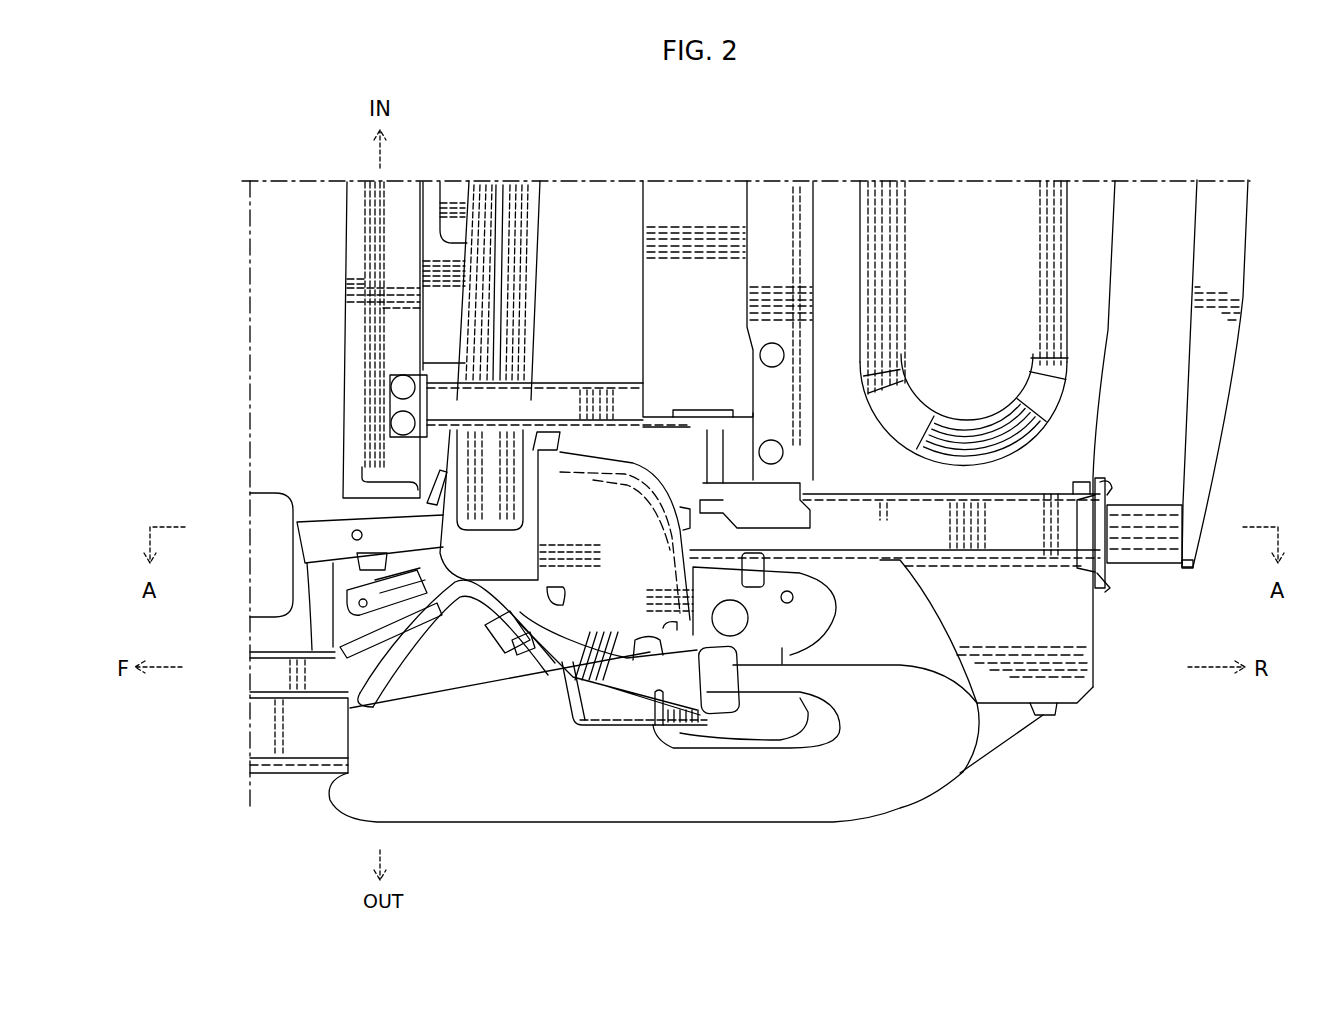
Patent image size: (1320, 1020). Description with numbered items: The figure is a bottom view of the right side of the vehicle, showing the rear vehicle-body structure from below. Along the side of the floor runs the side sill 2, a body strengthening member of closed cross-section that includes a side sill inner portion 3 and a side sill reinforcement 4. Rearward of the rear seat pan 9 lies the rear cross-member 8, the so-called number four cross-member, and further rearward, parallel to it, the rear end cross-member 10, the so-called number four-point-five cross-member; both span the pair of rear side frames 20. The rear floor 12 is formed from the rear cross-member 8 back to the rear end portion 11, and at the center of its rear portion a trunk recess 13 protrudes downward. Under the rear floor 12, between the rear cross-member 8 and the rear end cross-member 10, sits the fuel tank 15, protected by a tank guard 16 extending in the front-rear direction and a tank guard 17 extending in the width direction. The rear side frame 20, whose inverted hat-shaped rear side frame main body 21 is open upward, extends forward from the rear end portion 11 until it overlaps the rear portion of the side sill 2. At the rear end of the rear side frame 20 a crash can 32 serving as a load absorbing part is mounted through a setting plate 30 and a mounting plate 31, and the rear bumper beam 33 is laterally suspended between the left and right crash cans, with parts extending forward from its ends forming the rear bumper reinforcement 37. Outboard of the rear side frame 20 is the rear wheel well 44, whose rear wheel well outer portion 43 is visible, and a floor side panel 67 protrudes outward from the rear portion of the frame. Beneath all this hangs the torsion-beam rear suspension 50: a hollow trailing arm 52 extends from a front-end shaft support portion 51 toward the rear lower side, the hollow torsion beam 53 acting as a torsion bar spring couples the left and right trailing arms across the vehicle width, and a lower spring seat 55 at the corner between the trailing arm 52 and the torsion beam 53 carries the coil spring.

The side sill 2 is at (265, 790).
The side sill inner portion 3 is at (368, 662).
The side sill reinforcement 4 is at (290, 774).
The rear cross-member 8 is at (431, 178).
The rear seat pan 9 is at (309, 274).
The rear end cross-member 10 is at (775, 188).
The rear end portion 11 is at (1113, 350).
The rear floor 12 is at (843, 185).
The trunk recess 13 is at (989, 274).
The fuel tank 15 is at (603, 224).
The tank guard 16 is at (553, 392).
The tank guard 17 is at (702, 292).
The rear side frame 20 is at (880, 565).
The rear side frame main body 21 is at (847, 513).
The setting plate 30 is at (1087, 526).
The mounting plate 31 is at (1104, 497).
The crash can 32 is at (1142, 565).
The rear bumper beam 33 is at (1196, 237).
The rear bumper reinforcement 37 is at (1222, 453).
The rear wheel well outer portion 43 is at (858, 825).
The rear wheel well 44 is at (943, 622).
The torsion-beam rear suspension 50 is at (530, 297).
The front-end shaft support portion 51 is at (333, 592).
The trailing arm 52 is at (537, 657).
The torsion beam 53 is at (477, 310).
The lower spring seat 55 is at (618, 535).
The floor side panel 67 is at (1054, 629).